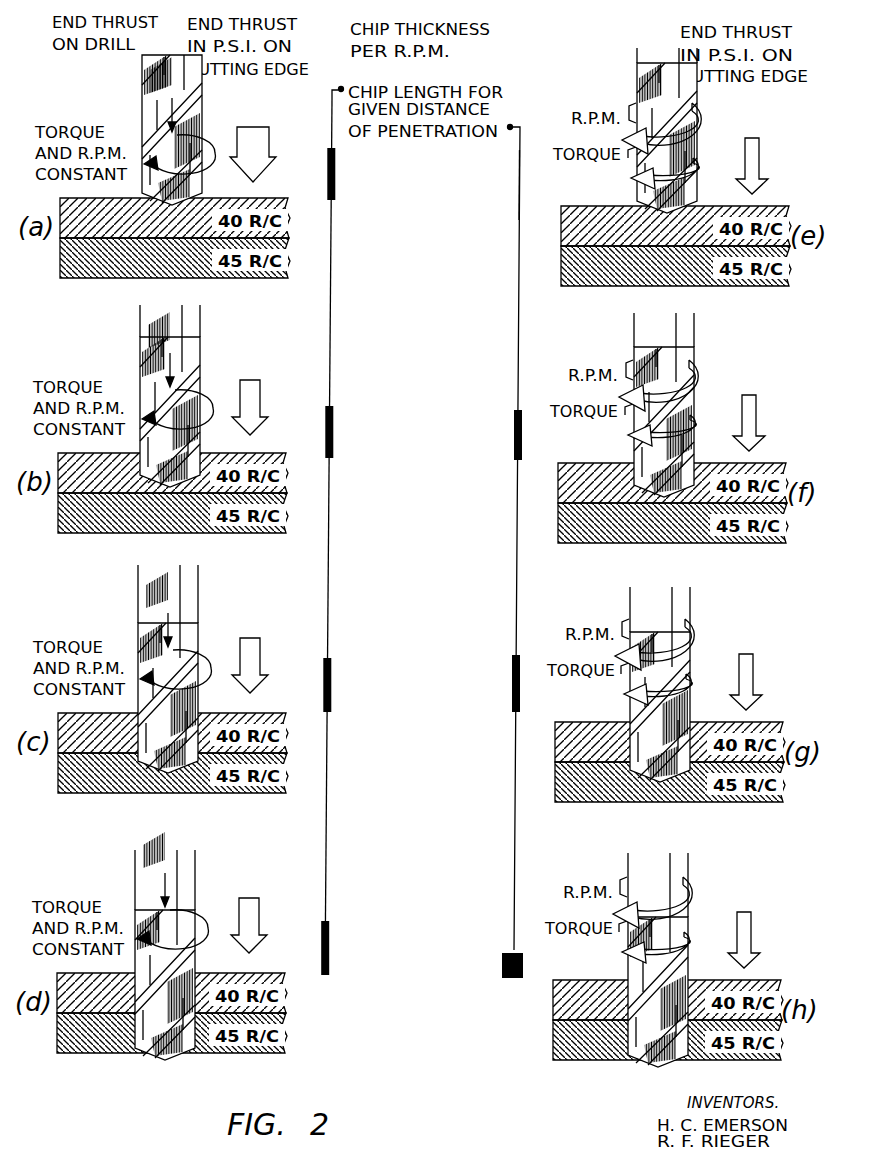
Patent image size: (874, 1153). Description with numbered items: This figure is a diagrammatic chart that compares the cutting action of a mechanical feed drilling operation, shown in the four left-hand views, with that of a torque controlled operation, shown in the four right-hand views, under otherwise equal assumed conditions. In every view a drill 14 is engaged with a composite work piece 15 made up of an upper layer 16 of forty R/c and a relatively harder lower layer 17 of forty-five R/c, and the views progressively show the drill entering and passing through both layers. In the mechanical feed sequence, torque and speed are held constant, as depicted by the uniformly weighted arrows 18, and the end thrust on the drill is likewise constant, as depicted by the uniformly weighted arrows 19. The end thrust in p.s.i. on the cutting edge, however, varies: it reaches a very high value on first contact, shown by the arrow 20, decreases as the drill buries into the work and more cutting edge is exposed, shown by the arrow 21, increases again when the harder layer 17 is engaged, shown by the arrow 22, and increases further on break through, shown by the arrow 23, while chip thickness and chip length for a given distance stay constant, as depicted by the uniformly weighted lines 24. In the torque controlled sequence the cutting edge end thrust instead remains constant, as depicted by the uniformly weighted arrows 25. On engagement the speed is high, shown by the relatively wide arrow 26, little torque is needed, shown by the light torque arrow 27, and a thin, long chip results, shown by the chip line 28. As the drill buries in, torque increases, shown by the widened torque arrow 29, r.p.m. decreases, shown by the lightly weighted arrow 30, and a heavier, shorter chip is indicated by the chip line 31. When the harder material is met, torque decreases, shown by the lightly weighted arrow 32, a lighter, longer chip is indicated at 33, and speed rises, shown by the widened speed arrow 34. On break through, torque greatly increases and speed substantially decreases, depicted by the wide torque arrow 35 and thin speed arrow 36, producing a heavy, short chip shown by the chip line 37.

The drill 14 is at (142, 101).
The composite work piece 15 is at (410, 627).
The upper layer 16 is at (60, 198).
The lower layer 17 is at (100, 279).
The uniformly weighted arrows 18 is at (214, 151).
The uniformly weighted arrows 19 is at (169, 85).
The arrow 20 is at (267, 124).
The arrow 21 is at (264, 380).
The arrow 22 is at (264, 638).
The arrow 23 is at (263, 898).
The uniformly weighted lines 24 is at (336, 178).
The uniformly weighted arrows 25 is at (765, 132).
The speed arrow 26 is at (700, 126).
The torque arrow 27 is at (706, 166).
The chip line 28 is at (519, 184).
The torque arrow 29 is at (697, 383).
The arrow 30 is at (702, 423).
The chip line 31 is at (514, 436).
The arrow 32 is at (699, 682).
The chip line 33 is at (512, 693).
The speed arrow 34 is at (693, 642).
The torque arrow 35 is at (697, 940).
The speed arrow 36 is at (691, 900).
The chip line 37 is at (502, 968).